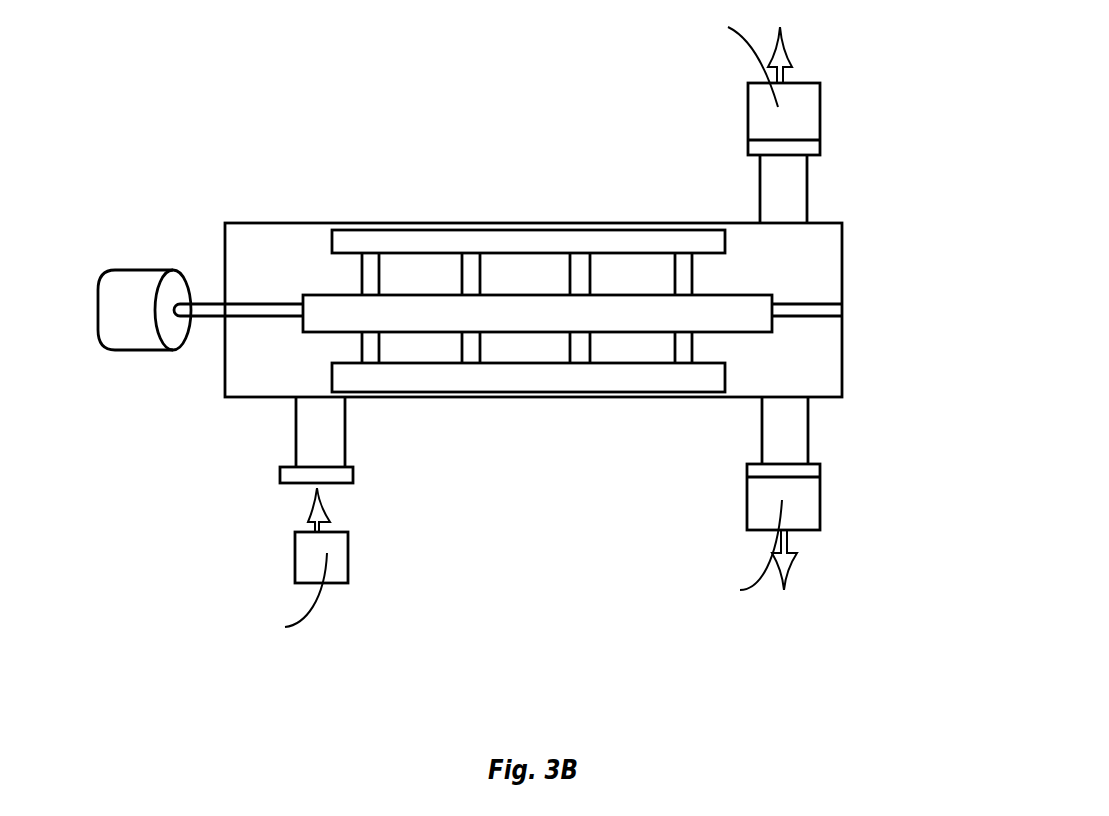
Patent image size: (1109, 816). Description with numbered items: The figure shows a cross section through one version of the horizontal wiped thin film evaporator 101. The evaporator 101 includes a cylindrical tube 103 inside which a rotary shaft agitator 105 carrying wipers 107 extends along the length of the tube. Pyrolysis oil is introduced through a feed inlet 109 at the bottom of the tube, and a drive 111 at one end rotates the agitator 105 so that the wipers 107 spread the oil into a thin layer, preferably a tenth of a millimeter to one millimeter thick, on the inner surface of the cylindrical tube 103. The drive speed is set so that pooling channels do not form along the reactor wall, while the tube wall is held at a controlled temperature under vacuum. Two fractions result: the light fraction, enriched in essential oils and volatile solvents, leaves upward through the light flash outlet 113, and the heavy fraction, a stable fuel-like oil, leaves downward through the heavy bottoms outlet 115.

The thin film evaporator 101 is at (488, 338).
The cylindrical tube 103 is at (265, 225).
The rotary shaft agitator 105 is at (258, 300).
The wipers 107 is at (636, 240).
The feed inlet 109 is at (296, 437).
The drive 111 is at (137, 270).
The light (flash) outlet 113 is at (807, 192).
The heavy bottoms outlet 115 is at (807, 427).